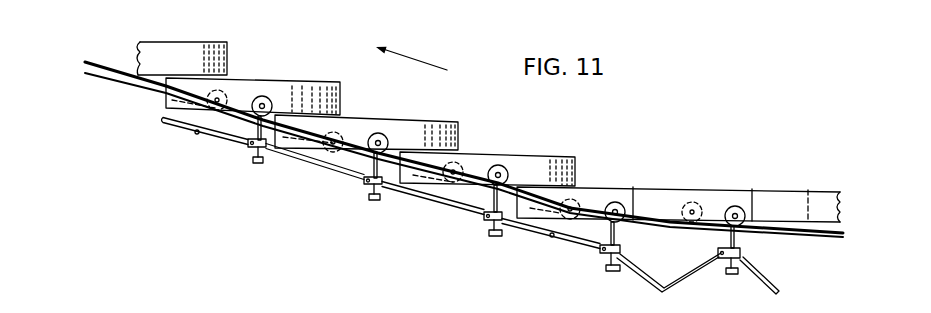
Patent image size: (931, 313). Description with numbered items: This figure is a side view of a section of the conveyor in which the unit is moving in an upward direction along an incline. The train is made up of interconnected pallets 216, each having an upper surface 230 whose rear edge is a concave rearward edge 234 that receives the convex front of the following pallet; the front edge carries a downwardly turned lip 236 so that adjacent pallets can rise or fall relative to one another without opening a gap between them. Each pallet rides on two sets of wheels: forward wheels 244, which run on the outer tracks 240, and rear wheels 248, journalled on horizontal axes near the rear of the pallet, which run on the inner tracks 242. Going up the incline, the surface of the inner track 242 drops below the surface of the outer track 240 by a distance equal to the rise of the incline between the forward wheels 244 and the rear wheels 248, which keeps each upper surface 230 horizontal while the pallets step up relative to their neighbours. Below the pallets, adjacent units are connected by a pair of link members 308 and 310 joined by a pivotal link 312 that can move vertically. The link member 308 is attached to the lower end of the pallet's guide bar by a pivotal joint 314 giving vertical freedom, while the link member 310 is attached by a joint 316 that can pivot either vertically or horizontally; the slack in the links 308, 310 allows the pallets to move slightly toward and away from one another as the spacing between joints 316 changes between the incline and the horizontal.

The pallet 216 is at (273, 52).
The upper surface of the pallet 230 is at (394, 117).
The concave rearward edge 234 is at (393, 182).
The downwardly turned lip 236 is at (462, 124).
The outer track 240 is at (111, 69).
The inner track 242 is at (103, 79).
The forward wheel 244 is at (271, 97).
The rear wheel 248 is at (228, 89).
The link member 308 is at (298, 168).
The link member 310 is at (356, 186).
The pivotal link 312 is at (315, 162).
The pivotal joint 314 is at (253, 163).
The joint 316 is at (503, 237).